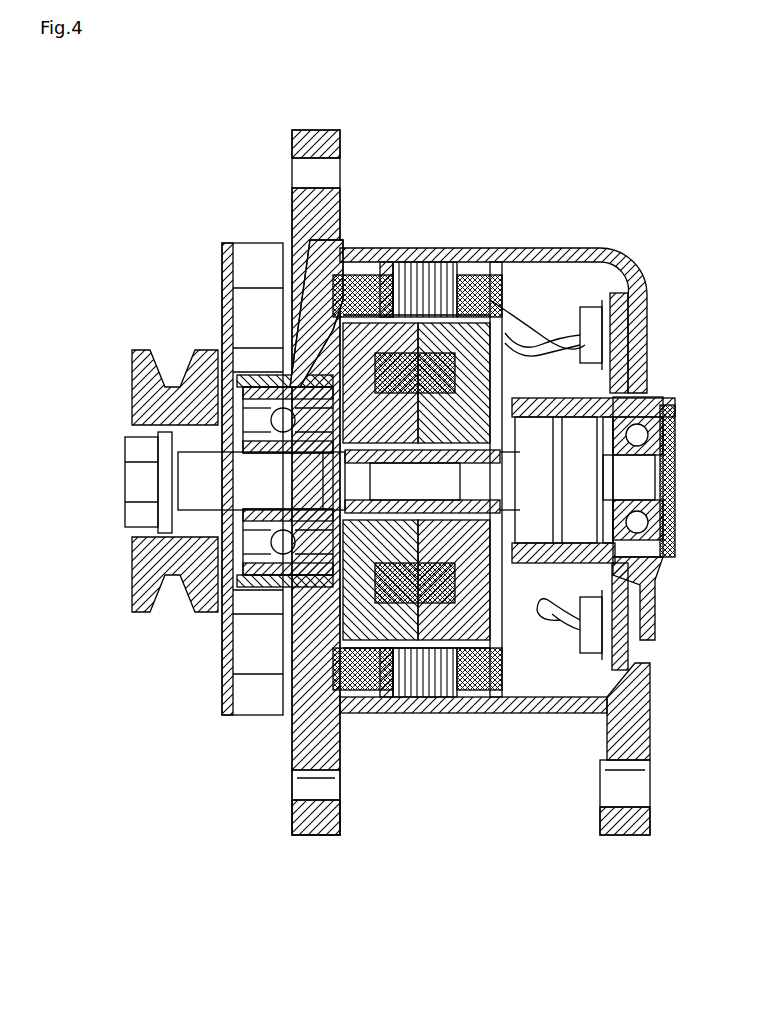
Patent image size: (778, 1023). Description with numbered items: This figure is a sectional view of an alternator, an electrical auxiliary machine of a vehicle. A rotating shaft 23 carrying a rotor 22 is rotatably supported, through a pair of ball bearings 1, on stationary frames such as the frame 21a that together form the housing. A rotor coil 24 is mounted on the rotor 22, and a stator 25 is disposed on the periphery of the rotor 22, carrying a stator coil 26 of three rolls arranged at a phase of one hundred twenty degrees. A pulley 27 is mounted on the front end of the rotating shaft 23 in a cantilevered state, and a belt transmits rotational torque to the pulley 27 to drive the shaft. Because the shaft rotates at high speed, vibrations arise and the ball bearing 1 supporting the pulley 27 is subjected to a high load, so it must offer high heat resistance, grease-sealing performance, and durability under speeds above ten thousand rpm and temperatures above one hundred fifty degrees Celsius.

The ball bearing 1 is at (260, 395).
The frame 21a is at (320, 835).
The rotor 22 is at (503, 333).
The rotating shaft 23 is at (225, 445).
The rotor coil 24 is at (463, 293).
The stator 25 is at (365, 262).
The stator coil 26 is at (413, 272).
The pulley 27 is at (157, 422).